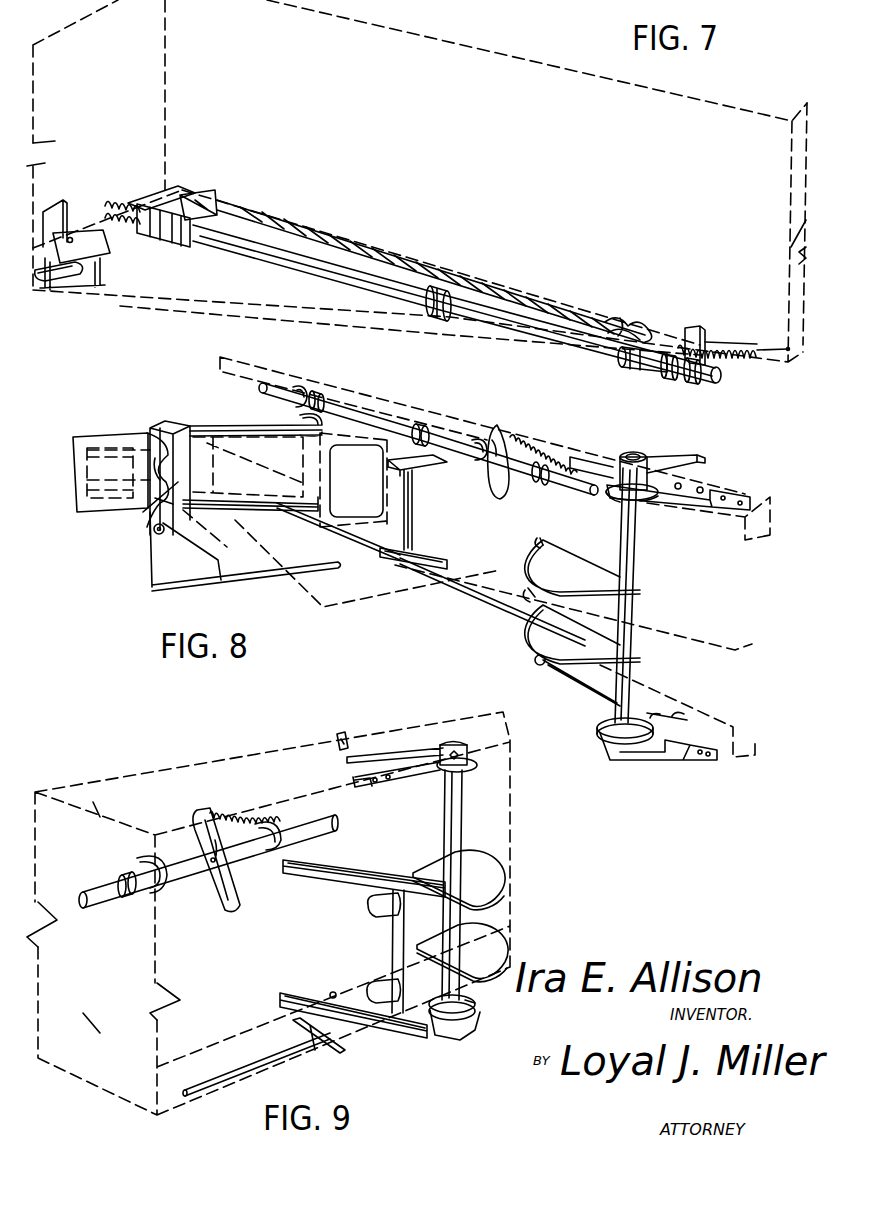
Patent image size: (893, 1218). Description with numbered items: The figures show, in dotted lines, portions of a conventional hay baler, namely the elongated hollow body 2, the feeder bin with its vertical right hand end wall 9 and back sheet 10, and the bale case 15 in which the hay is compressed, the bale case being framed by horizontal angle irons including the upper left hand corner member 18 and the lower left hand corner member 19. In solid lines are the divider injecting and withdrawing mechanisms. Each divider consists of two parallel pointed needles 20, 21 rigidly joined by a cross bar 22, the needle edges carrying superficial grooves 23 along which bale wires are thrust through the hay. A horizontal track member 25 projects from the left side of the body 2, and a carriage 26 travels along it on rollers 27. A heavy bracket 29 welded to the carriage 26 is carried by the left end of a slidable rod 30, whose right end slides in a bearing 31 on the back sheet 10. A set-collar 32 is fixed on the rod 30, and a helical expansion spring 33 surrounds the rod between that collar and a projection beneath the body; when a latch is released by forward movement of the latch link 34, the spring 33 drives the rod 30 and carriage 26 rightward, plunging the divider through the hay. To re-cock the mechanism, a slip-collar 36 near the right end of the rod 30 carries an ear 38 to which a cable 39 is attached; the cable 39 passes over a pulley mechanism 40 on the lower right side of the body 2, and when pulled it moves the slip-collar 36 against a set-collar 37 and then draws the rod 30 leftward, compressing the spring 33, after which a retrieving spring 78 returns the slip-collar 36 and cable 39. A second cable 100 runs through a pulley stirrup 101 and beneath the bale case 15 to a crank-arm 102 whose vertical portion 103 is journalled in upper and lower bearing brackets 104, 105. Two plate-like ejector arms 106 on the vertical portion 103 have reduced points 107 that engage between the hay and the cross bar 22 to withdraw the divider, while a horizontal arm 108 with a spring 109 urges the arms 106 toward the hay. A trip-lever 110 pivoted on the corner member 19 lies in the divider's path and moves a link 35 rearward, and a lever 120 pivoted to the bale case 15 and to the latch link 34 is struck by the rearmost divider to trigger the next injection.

In FIG. 7, the hollow body 2 is at (99, 93).
In FIG. 7, the right hand end wall 9 is at (788, 294).
In FIG. 7, the back sheet 10 is at (430, 145).
In FIG. 8, the bale case 15 is at (287, 539).
In FIG. 9, the bale case 15 is at (176, 807).
In FIG. 8, the upper left hand corner member 18 is at (730, 522).
In FIG. 8, the lower left hand corner member 19 is at (700, 720).
In FIG. 8, the needle 20 is at (215, 426).
In FIG. 9, the needle 20 is at (313, 873).
In FIG. 8, the needle 21 is at (257, 508).
In FIG. 9, the needle 21 is at (295, 993).
In FIG. 8, the cross bar 22 is at (190, 462).
In FIG. 9, the cross bar 22 is at (393, 935).
In FIG. 8, the grooves 23 is at (455, 558).
In FIG. 9, the grooves 23 is at (347, 882).
In FIG. 8, the track member 25 is at (100, 434).
In FIG. 8, the carriage 26 is at (150, 508).
In FIG. 8, the rollers 27 is at (75, 457).
In FIG. 8, the bracket 29 is at (200, 548).
In FIG. 7, the slidable rod 30 is at (268, 252).
In FIG. 7, the bearing 31 is at (702, 326).
In FIG. 7, the set-collar 32 is at (176, 248).
In FIG. 7, the helical expansion spring 33 is at (120, 208).
In FIG. 8, the latch link 34 is at (362, 413).
In FIG. 9, the latch link 34 is at (98, 878).
In FIG. 8, the link 35 is at (347, 540).
In FIG. 9, the link 35 is at (210, 1090).
In FIG. 7, the slip-collar 36 is at (636, 369).
In FIG. 7, the set-collar 37 is at (425, 304).
In FIG. 7, the ear 38 is at (650, 337).
In FIG. 7, the cable 39 is at (530, 305).
In FIG. 7, the pulley mechanism 40 is at (196, 204).
In FIG. 7, the retrieving spring 78 is at (745, 345).
In FIG. 7, the second cable 100 is at (112, 233).
In FIG. 7, the pulley stirrup 101 is at (80, 236).
In FIG. 8, the crank-arm 102 is at (660, 752).
In FIG. 9, the crank-arm 102 is at (436, 1035).
In FIG. 8, the vertical portion 103 is at (633, 625).
In FIG. 9, the vertical portion 103 is at (447, 802).
In FIG. 8, the upper bearing bracket 104 is at (620, 493).
In FIG. 9, the upper bearing bracket 104 is at (440, 770).
In FIG. 8, the lower bearing bracket 105 is at (605, 746).
In FIG. 9, the lower bearing bracket 105 is at (475, 1011).
In FIG. 8, the ejector arms 106 is at (580, 560).
In FIG. 9, the ejector arms 106 is at (440, 868).
In FIG. 8, the points 107 is at (540, 540).
In FIG. 9, the points 107 is at (368, 908).
In FIG. 8, the horizontal arm 108 is at (670, 448).
In FIG. 9, the horizontal arm 108 is at (398, 758).
In FIG. 8, the spring 109 is at (703, 456).
In FIG. 9, the spring 109 is at (338, 745).
In FIG. 9, the trip-lever 110 is at (331, 993).
In FIG. 8, the lever 120 is at (494, 498).
In FIG. 9, the lever 120 is at (205, 900).